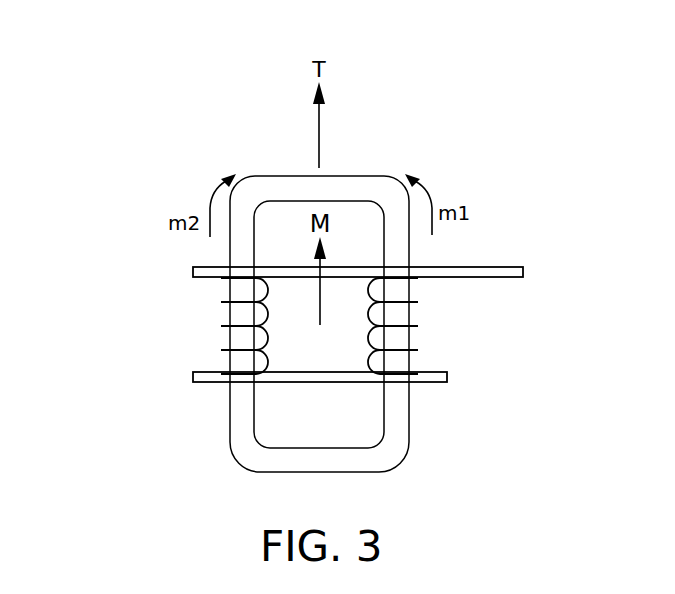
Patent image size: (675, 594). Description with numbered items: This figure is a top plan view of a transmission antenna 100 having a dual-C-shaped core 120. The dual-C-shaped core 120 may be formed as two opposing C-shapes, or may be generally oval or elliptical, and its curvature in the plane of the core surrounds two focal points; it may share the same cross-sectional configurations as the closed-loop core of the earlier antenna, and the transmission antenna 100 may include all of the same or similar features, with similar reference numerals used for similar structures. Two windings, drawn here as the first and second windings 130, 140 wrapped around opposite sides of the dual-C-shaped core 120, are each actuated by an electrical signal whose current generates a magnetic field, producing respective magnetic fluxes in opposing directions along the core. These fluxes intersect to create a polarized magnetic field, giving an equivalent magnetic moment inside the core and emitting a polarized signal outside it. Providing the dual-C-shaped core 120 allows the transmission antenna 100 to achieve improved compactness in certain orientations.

The transmission antenna 100 is at (108, 180).
The dual-C-shaped core 120 is at (387, 193).
The first coil (m1) 130 is at (477, 343).
The second coil (m2) 140 is at (156, 347).